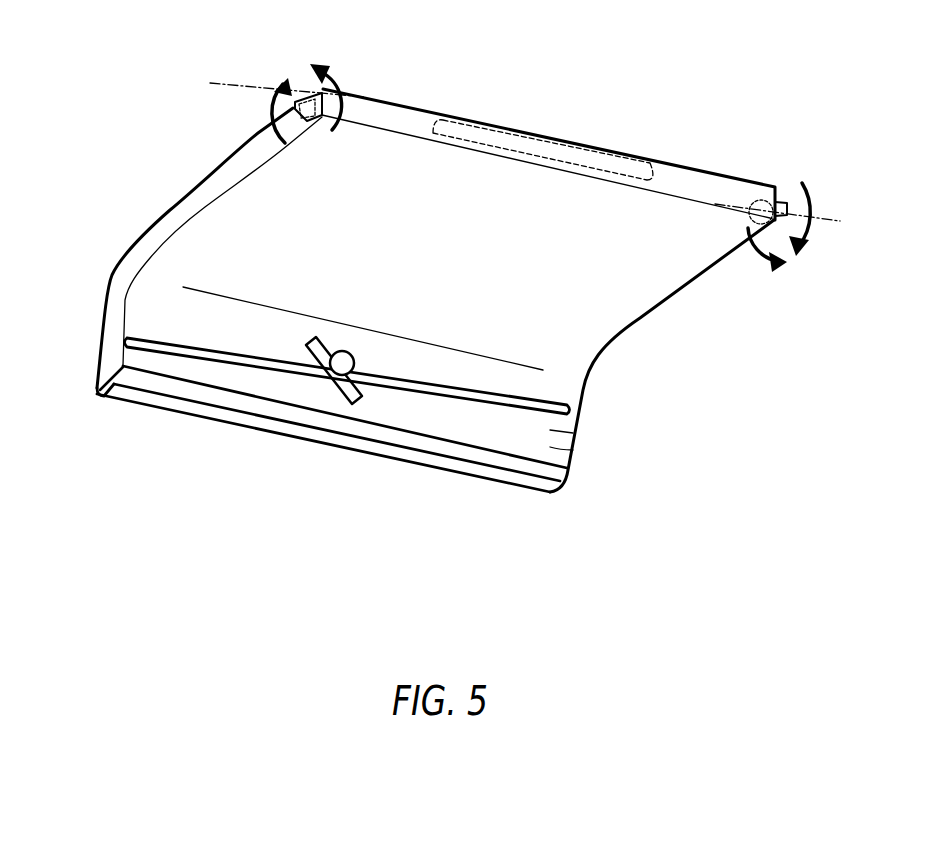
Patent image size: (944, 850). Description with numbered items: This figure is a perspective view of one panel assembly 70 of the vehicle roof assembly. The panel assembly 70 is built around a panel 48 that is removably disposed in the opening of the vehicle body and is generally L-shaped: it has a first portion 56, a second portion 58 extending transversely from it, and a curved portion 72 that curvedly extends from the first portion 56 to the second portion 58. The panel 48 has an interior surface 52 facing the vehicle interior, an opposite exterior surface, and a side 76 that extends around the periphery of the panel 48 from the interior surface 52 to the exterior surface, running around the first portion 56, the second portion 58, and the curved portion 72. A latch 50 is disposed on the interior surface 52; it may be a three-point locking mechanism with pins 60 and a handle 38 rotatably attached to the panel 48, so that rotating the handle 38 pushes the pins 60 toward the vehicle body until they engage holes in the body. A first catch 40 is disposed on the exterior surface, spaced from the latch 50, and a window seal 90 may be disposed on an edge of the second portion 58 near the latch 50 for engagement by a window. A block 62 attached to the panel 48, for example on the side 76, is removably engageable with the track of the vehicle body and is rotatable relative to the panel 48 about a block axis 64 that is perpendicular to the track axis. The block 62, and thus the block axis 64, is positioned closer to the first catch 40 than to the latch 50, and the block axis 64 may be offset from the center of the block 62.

The panel assembly 70 is at (110, 125).
The first catch 40 is at (543, 137).
The block 62 is at (303, 96).
The block axis 64 is at (212, 83).
The first portion 56 is at (622, 276).
The side 76 is at (110, 357).
The curved portion 72 is at (520, 362).
The panel 48 is at (153, 420).
The pins 60 is at (227, 375).
The interior surface 52 is at (560, 452).
The second portion 58 is at (573, 433).
The window seal 90 is at (100, 396).
The latch 50 is at (404, 402).
The handle 38 is at (350, 406).